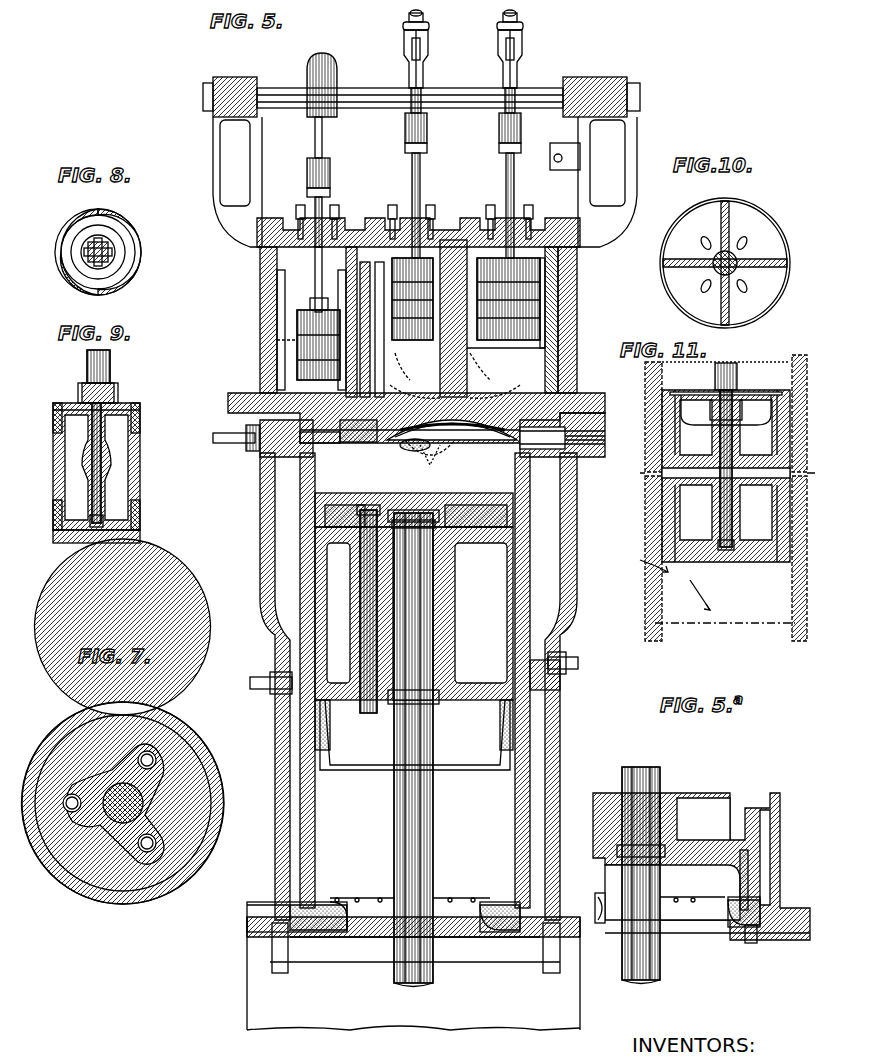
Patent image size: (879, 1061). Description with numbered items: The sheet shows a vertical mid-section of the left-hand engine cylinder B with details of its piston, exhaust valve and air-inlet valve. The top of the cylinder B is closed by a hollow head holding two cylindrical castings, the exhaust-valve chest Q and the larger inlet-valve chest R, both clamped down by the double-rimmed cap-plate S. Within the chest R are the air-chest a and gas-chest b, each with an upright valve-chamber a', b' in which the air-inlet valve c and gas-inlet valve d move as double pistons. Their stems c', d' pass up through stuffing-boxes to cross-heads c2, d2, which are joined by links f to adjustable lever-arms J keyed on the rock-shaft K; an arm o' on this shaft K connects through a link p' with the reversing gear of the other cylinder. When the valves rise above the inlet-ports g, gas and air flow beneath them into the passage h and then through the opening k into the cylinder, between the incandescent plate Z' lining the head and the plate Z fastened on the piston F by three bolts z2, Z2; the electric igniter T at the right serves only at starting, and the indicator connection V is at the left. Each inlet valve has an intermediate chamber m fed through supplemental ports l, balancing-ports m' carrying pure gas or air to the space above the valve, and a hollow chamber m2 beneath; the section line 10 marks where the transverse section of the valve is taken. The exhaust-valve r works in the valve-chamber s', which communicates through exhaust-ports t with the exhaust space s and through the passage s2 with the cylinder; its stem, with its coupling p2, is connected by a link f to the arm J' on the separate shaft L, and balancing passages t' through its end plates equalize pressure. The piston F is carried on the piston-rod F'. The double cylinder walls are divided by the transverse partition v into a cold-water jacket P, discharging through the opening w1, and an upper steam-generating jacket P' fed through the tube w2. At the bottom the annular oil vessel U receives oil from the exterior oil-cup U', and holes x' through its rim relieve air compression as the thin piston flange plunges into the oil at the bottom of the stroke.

In FIG. 5, the adjustable lever-arm J is at (449, 61).
In FIG. 5, the exhaust-valve arm J' is at (308, 85).
In FIG. 5, the rock-shaft K is at (450, 106).
In FIG. 5, the exhaust rock-shaft L is at (285, 108).
In FIG. 5, the link f is at (425, 78).
In FIG. 5, the gas-valve cross-head d2 is at (405, 134).
In FIG. 5, the air-valve cross-head c2 is at (499, 134).
In FIG. 5, the downwardly-projecting arm o' is at (553, 150).
In FIG. 5, the link p' is at (337, 215).
In FIG. 9, the link p' is at (88, 366).
In FIG. 5, the coupling p2 is at (330, 172).
In FIG. 5, the gas-valve stem d' is at (425, 205).
In FIG. 5, the air-valve stem c' is at (517, 205).
In FIG. 11, the air-valve stem c' is at (732, 456).
In FIG. 5, the gas-chest b is at (453, 289).
In FIG. 5, the cap-plate S is at (560, 232).
In FIG. 5, the exhaust-valve chest Q is at (268, 305).
In FIG. 5, the inlet-valve chest R is at (570, 285).
In FIG. 5, the exhaust chest s is at (292, 330).
In FIG. 5, the exhaust valve-chamber s' is at (312, 279).
In FIG. 5, the supplemental port l is at (380, 300).
In FIG. 11, the supplemental port l is at (645, 475).
In FIG. 5, the exhaust-valve r is at (318, 339).
In FIG. 8, the exhaust-valve r is at (90, 252).
In FIG. 9, the exhaust-valve r is at (140, 497).
In FIG. 5, the exhaust-port t is at (246, 364).
In FIG. 5, the gas-inlet valve d is at (412, 299).
In FIG. 5, the air-inlet valve c is at (508, 299).
In FIG. 10, the air-inlet valve c is at (692, 233).
In FIG. 11, the air-inlet valve c is at (691, 500).
In FIG. 5, the air-chest a is at (534, 337).
In FIG. 5, the inlet-port g is at (545, 352).
In FIG. 11, the inlet-port g is at (667, 578).
In FIG. 5, the gas valve-chamber b' is at (409, 363).
In FIG. 5, the air valve-chamber a' is at (500, 363).
In FIG. 5, the passage h is at (455, 394).
In FIG. 5, the incandescent plate Z' is at (416, 432).
In FIG. 5, the piston plate Z is at (430, 466).
In FIG. 5, the exhaust passage s2 is at (336, 443).
In FIG. 5, the inlet opening k is at (465, 445).
In FIG. 5, the indicator connection V is at (263, 445).
In FIG. 5, the electric igniter T is at (564, 443).
In FIG. 5, the engine-cylinder B is at (403, 686).
In FIG. 5, the steam-generating jacket P' is at (448, 680).
In FIG. 5, the cold-water jacket P is at (544, 680).
In FIG. 5, the piston F is at (414, 631).
In FIG. 7, the piston F is at (123, 721).
In FIG. 5A, the piston F is at (701, 866).
In FIG. 5, the bolt z2 is at (362, 622).
In FIG. 5, the piston-rod F' is at (420, 748).
In FIG. 5A, the piston-rod F' is at (641, 875).
In FIG. 5, the discharge opening w1 is at (262, 688).
In FIG. 5, the inlet tube w2 is at (568, 660).
In FIG. 5, the transverse partition v is at (560, 680).
In FIG. 5, the oil-cup U' is at (284, 911).
In FIG. 5, the annular oil vessel U is at (413, 966).
In FIG. 5A, the annular oil vessel U is at (707, 909).
In FIG. 5, the hole x' is at (410, 886).
In FIG. 5A, the hole x' is at (692, 887).
In FIG. 8, the valve stem t' is at (121, 250).
In FIG. 9, the valve stem t' is at (101, 480).
In FIG. 7, the bolt Z2 is at (157, 840).
In FIG. 10, the intermediate chamber m is at (725, 263).
In FIG. 11, the intermediate chamber m is at (726, 476).
In FIG. 10, the balancing-port m' is at (736, 268).
In FIG. 11, the balancing-port m' is at (738, 476).
In FIG. 11, the lower chamber m2 is at (698, 518).
In FIG. 11, the section line 10 is at (726, 474).